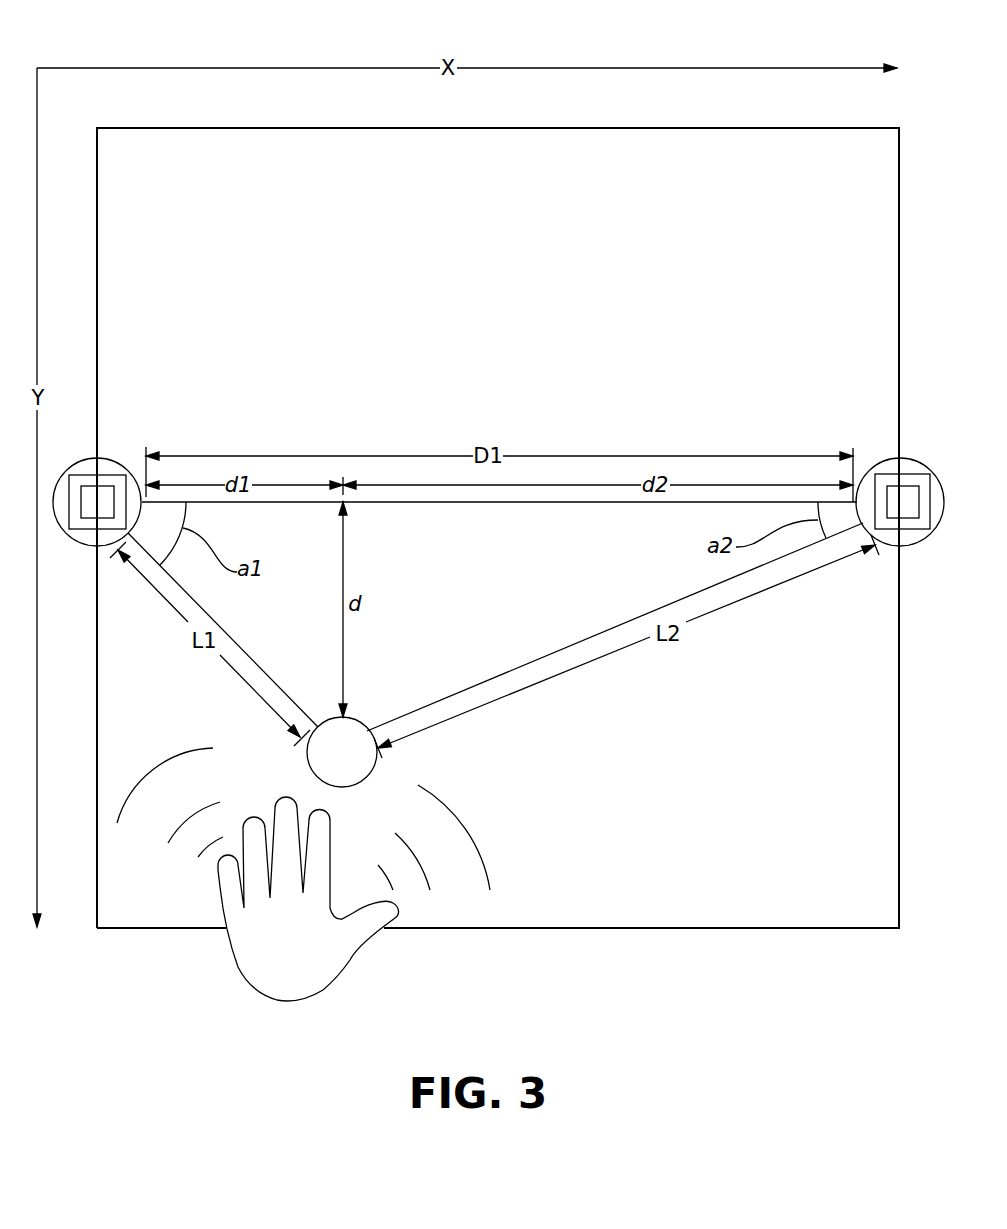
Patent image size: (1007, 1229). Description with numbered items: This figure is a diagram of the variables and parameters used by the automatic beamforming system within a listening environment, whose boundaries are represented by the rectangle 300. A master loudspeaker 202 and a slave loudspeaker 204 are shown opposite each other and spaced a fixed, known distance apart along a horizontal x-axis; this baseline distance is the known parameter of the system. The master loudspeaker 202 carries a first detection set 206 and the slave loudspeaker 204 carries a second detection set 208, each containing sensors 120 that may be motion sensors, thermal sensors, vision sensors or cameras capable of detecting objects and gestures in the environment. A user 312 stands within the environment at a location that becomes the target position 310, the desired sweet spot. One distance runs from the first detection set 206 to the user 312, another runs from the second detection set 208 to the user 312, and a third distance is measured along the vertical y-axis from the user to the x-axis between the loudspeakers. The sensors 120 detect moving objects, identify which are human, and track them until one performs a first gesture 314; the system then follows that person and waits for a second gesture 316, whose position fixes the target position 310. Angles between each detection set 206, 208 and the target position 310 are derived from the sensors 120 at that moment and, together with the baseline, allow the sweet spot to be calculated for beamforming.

The rectangle 300 is at (213, 127).
The master loudspeaker 202 is at (120, 462).
The slave loudspeaker 204 is at (877, 462).
The first detection set 206 is at (103, 473).
The second detection set 208 is at (893, 473).
The sensors 120 is at (95, 518).
The target position 310 is at (358, 718).
The user 312 is at (332, 985).
The first gesture 314 is at (198, 758).
The second gesture 316 is at (470, 845).